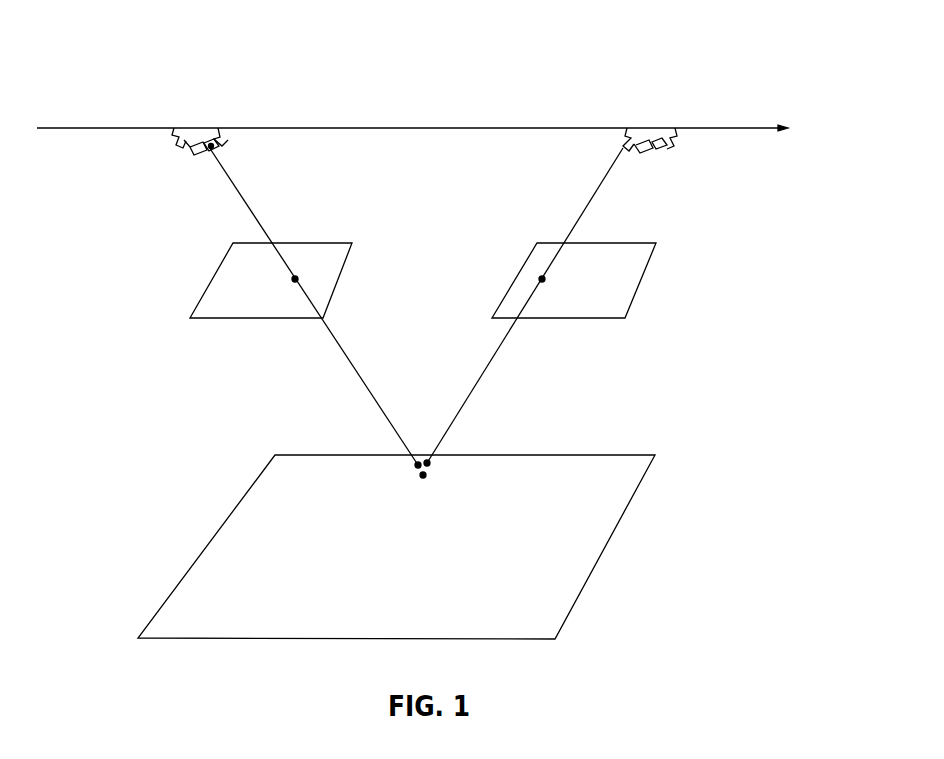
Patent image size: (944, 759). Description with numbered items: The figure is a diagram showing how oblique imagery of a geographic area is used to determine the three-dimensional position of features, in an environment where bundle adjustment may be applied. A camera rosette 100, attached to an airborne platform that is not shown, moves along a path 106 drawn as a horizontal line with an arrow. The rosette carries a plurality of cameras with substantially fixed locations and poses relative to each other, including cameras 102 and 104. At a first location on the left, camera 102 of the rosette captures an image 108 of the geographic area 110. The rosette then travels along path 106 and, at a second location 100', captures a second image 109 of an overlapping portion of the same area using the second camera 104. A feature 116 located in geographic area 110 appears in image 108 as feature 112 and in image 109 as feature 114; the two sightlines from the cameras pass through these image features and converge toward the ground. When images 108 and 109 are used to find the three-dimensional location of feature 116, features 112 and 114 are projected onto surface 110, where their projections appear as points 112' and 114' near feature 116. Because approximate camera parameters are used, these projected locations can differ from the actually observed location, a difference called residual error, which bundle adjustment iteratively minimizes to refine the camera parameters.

The camera rosette 100 is at (211, 139).
The second location 100' is at (682, 139).
The camera 102 is at (202, 152).
The second camera 104 is at (626, 156).
The path 106 is at (430, 128).
The image 108 is at (323, 243).
The image 109 is at (596, 243).
The geographic area 110 is at (517, 455).
The feature 112 is at (343, 269).
The first beam point on target plane 112' is at (378, 448).
The feature 114 is at (496, 269).
The second beam point on target plane 114' is at (462, 445).
The feature 116 is at (423, 475).